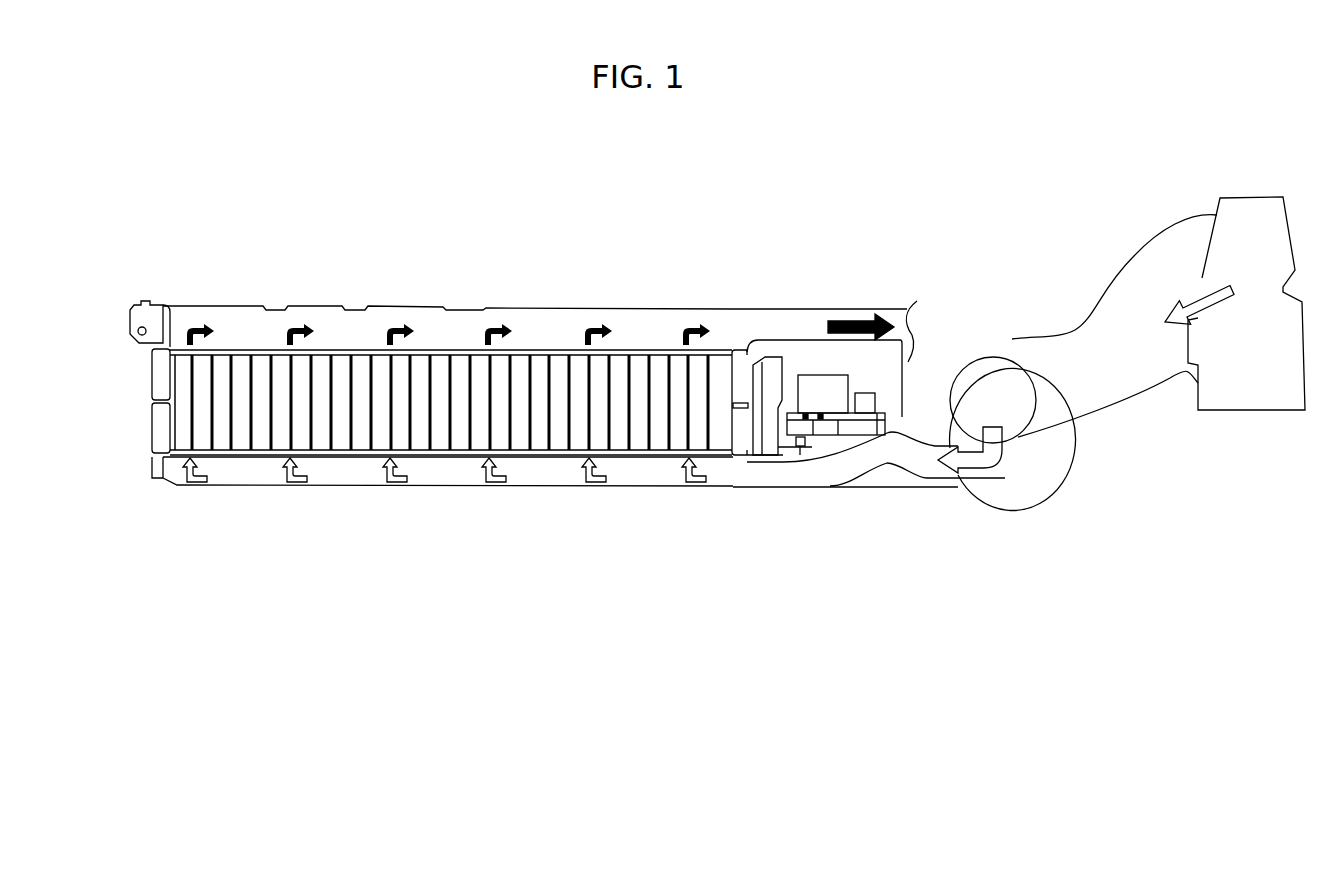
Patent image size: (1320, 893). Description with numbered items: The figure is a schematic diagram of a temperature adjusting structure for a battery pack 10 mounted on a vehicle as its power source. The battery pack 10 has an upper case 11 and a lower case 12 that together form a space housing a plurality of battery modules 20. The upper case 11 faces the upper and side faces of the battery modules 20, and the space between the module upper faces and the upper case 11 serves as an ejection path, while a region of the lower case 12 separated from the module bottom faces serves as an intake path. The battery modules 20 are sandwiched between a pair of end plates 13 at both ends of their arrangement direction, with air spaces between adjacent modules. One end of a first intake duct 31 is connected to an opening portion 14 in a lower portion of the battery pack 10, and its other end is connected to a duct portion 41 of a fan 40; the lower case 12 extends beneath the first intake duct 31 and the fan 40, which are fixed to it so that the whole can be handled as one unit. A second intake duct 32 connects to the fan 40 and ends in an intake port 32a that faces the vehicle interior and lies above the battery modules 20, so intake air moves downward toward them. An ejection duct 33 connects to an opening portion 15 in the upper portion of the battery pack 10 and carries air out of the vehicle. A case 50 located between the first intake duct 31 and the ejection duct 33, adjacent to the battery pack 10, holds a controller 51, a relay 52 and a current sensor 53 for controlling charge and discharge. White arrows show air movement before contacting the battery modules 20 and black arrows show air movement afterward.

The battery pack 10 is at (291, 287).
The upper case 11 is at (423, 305).
The lower case 12 is at (360, 487).
The end plates 13 is at (170, 424).
The opening portion 14 is at (732, 475).
The opening portion 15 is at (733, 323).
The battery modules 20 is at (540, 430).
The first intake duct 31 is at (863, 477).
The second intake duct 32 is at (1127, 405).
The intake port 32a is at (1253, 413).
The ejection duct 33 is at (797, 309).
The fan 40 is at (1046, 455).
The duct portion 41 is at (957, 480).
The case 50 is at (902, 386).
The controller 51 is at (772, 375).
The relay 52 is at (830, 380).
The current sensor 53 is at (862, 393).